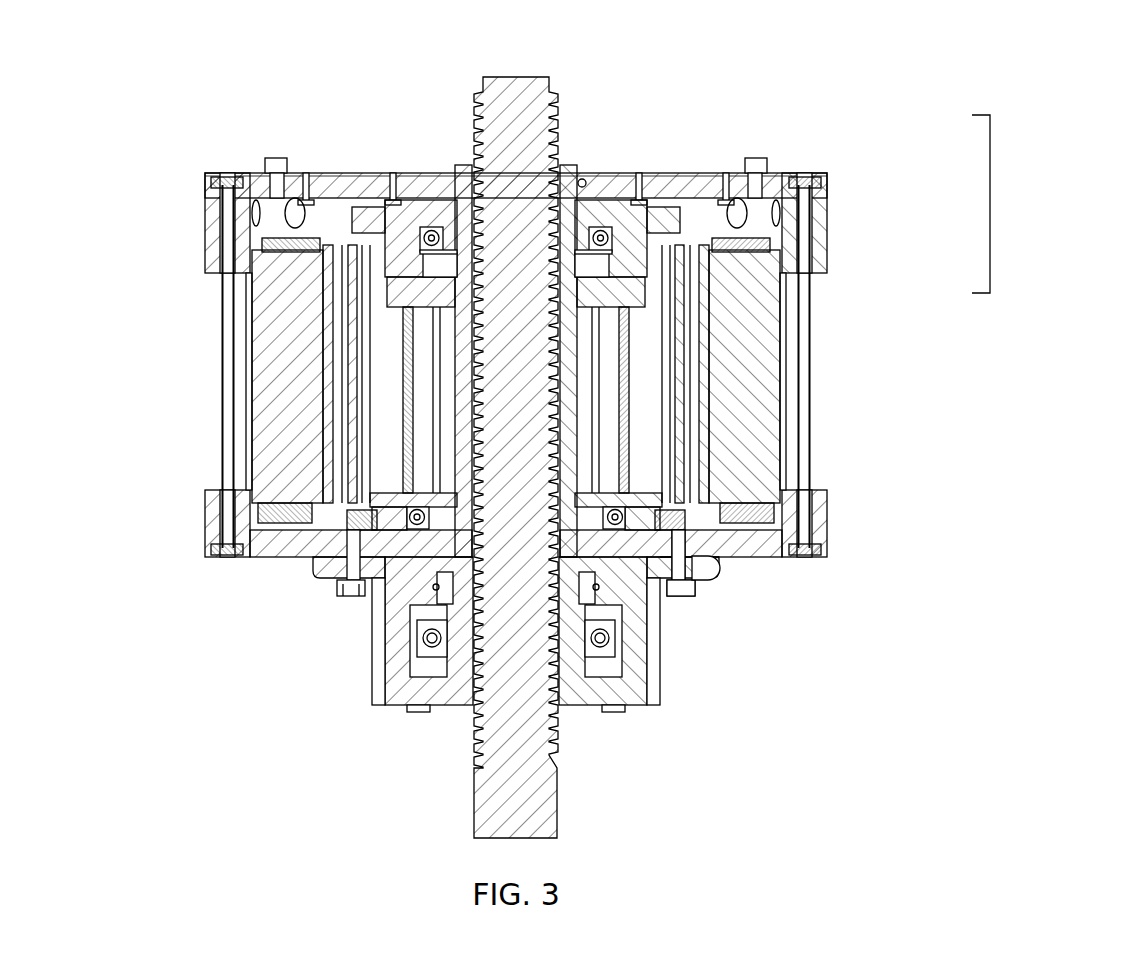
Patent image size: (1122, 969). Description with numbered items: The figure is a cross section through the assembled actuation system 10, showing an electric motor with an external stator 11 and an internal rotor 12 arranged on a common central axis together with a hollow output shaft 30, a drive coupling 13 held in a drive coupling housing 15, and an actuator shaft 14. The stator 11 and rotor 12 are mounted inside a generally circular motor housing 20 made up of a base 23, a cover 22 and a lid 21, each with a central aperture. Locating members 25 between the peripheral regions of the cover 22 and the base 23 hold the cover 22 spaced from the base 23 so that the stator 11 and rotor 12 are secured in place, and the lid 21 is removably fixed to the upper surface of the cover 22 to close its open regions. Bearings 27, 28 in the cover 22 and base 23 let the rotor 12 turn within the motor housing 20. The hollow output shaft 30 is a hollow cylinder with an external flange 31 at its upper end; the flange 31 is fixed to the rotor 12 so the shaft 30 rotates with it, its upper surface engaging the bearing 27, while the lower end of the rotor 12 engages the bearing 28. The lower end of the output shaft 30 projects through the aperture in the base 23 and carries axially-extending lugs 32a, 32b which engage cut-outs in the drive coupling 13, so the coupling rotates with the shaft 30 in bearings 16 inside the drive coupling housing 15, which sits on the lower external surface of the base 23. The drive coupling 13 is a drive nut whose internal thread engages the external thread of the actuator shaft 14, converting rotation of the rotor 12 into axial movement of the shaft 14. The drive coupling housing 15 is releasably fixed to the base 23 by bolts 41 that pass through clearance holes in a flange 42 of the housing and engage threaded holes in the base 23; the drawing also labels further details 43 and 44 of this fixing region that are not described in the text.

The actuation system 10 is at (96, 105).
The external stator 11 is at (252, 340).
The internal rotor 12 is at (385, 458).
The drive coupling 13 is at (462, 645).
The actuator shaft 14 is at (505, 757).
The drive coupling housing 15 is at (637, 625).
The bearings 16 is at (610, 655).
The motor housing 20 is at (1003, 205).
The lid 21 is at (826, 173).
The cover 22 is at (822, 222).
The base 23 is at (826, 498).
The locating members 25 is at (229, 414).
The bearing 27 is at (423, 242).
The bearing 28 is at (608, 517).
The hollow output shaft 30 is at (453, 205).
The external flange 31 is at (600, 258).
The axially-extending lug 32a is at (447, 547).
The axially-extending lug 32b is at (613, 556).
The bolts 41 is at (683, 588).
The flange 42 is at (717, 567).
The fixing portion 43 is at (590, 548).
The bolt 44 is at (667, 574).